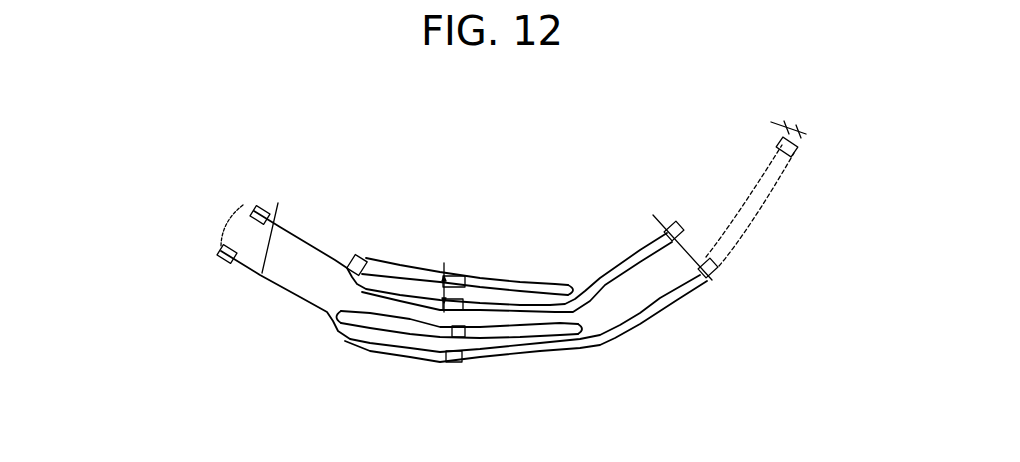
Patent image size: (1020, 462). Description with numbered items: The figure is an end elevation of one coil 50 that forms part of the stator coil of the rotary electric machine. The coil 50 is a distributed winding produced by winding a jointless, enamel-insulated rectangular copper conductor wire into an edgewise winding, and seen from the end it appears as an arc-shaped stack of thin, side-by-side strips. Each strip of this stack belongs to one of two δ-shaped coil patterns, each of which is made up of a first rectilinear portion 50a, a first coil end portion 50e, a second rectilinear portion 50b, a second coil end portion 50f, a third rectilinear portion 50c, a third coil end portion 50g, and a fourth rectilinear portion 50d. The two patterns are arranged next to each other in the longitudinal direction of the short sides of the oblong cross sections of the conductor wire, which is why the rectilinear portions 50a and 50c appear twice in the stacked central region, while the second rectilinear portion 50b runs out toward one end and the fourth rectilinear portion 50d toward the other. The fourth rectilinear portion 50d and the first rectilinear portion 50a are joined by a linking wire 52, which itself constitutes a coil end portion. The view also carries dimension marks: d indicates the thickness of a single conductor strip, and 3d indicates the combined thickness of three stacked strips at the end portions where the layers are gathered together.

The coil 50 is at (262, 142).
The first rectilinear portion 50a is at (455, 275).
The second rectilinear portion 50b is at (446, 270).
The third rectilinear portion 50c is at (468, 302).
The fourth rectilinear portion 50d is at (708, 257).
The first coil end portion 50e is at (388, 325).
The second coil end portion 50f is at (311, 247).
The third coil end portion 50g is at (549, 343).
The linking wire 52 is at (622, 268).
The thickness of three plates 3d is at (487, 230).
The plate thickness d is at (617, 211).